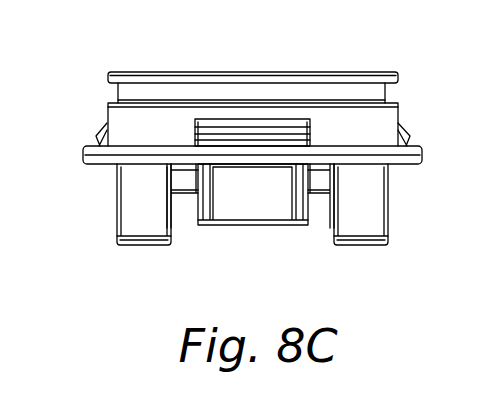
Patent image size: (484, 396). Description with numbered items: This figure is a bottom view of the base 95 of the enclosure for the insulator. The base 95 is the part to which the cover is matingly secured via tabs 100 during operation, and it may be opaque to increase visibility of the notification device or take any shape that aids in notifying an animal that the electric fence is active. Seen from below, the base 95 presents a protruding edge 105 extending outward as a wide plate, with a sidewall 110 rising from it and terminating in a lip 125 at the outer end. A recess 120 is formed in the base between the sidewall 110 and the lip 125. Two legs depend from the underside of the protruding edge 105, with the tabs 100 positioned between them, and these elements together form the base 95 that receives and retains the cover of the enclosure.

The base 95 is at (156, 45).
The tabs 100 is at (279, 124).
The protruding edge 105 is at (88, 149).
The sidewall 110 is at (118, 119).
The recess 120 is at (386, 93).
The lip 125 is at (108, 77).